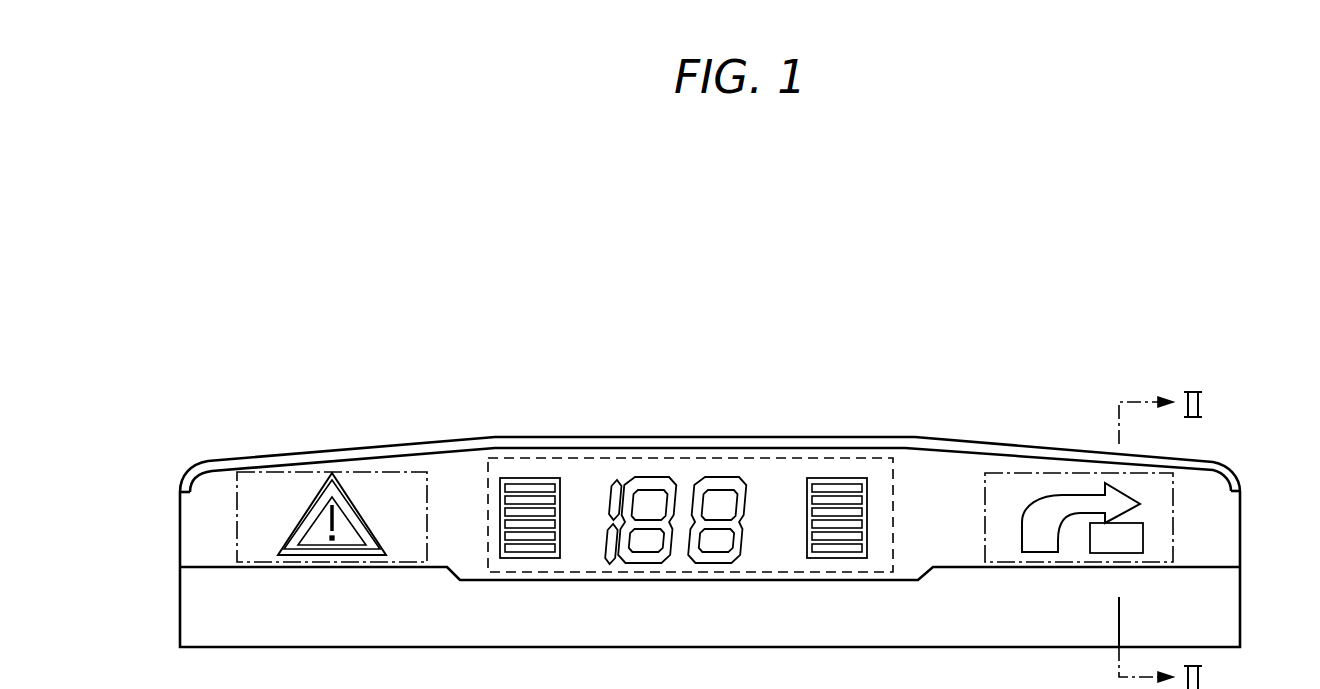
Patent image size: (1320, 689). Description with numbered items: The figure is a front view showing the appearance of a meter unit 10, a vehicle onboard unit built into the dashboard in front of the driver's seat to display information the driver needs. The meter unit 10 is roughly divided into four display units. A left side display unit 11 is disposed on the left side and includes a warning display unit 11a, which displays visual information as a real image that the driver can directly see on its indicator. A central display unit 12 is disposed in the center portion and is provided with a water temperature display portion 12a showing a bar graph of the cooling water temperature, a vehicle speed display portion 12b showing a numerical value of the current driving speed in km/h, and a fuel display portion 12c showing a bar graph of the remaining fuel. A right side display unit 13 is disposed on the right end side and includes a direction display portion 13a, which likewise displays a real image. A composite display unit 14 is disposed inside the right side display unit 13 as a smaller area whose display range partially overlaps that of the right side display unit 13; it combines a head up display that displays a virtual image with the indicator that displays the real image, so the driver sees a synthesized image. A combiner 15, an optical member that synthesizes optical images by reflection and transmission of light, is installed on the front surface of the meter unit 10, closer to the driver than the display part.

The meter unit 10 is at (555, 287).
The left side display unit 11 is at (278, 495).
The warning display unit 11a is at (365, 517).
The central display unit 12 is at (690, 472).
The water temperature display portion 12a is at (530, 478).
The vehicle speed display portion 12b is at (655, 478).
The fuel display portion 12c is at (835, 478).
The right side display unit 13 is at (1062, 483).
The direction display portion 13a is at (1040, 500).
The composite display unit 14 is at (1148, 532).
The combiner 15 is at (922, 475).